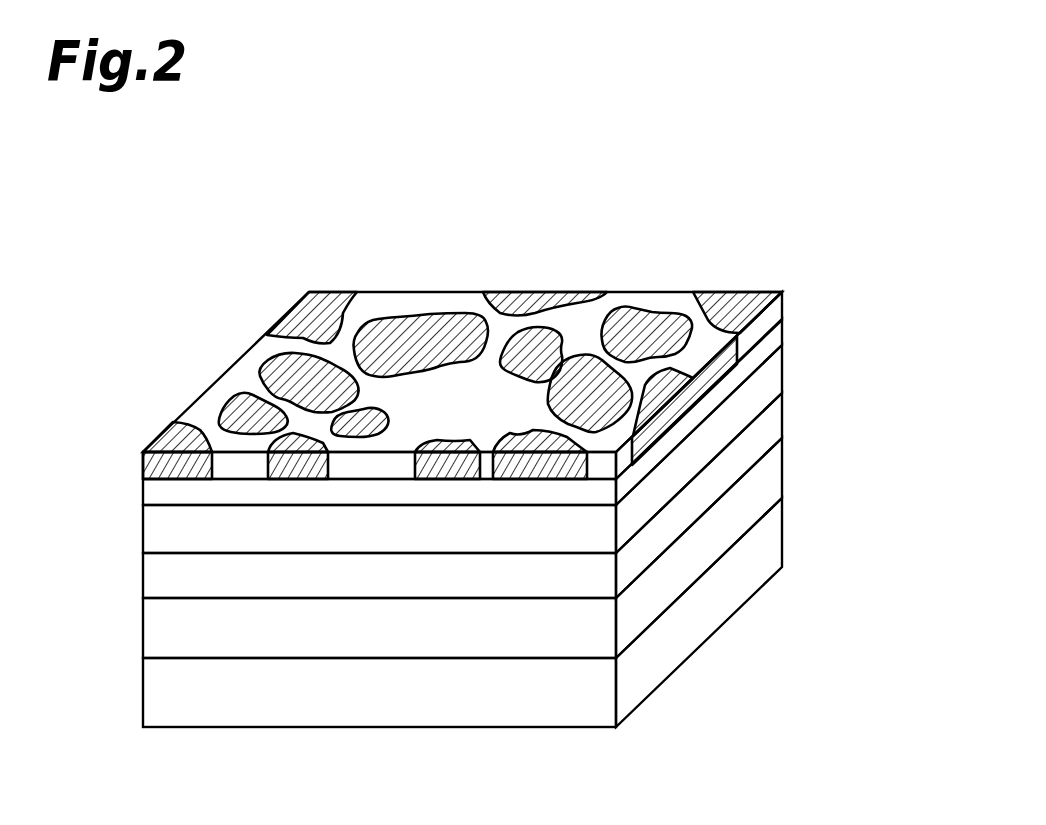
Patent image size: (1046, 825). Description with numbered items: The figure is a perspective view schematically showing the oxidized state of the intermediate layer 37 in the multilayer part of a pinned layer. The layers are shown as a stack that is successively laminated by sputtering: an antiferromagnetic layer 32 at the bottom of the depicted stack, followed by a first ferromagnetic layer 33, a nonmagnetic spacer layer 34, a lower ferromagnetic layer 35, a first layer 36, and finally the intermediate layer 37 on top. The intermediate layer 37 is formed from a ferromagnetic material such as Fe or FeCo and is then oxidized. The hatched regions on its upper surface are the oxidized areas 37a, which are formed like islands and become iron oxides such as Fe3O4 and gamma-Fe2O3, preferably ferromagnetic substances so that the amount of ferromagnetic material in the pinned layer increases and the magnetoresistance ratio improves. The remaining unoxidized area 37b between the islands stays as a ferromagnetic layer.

The antiferromagnetic layer 32 is at (783, 533).
The first ferromagnetic layer 33 is at (783, 470).
The nonmagnetic spacer layer 34 is at (783, 417).
The lower ferromagnetic layer 35 is at (783, 370).
The first layer 36 is at (783, 332).
The intermediate layer 37 is at (535, 326).
The oxidized areas 37a is at (316, 320).
The unoxidized area 37b is at (397, 308).